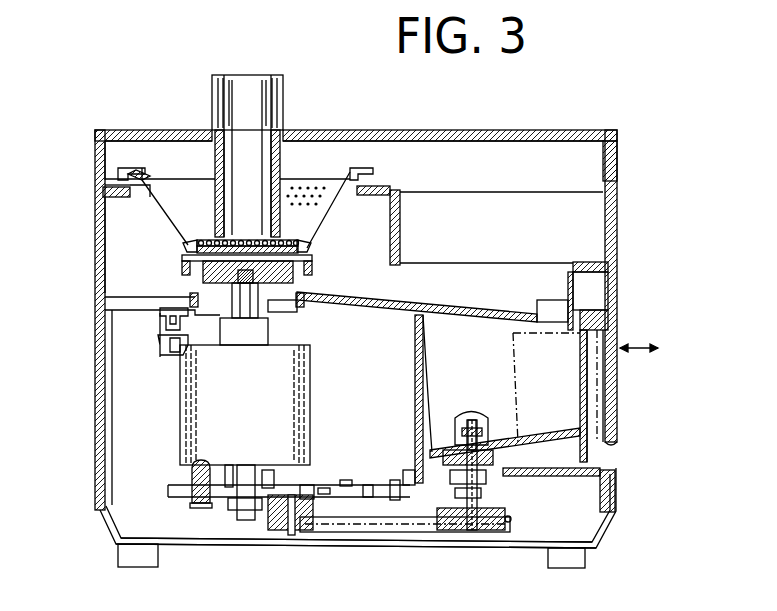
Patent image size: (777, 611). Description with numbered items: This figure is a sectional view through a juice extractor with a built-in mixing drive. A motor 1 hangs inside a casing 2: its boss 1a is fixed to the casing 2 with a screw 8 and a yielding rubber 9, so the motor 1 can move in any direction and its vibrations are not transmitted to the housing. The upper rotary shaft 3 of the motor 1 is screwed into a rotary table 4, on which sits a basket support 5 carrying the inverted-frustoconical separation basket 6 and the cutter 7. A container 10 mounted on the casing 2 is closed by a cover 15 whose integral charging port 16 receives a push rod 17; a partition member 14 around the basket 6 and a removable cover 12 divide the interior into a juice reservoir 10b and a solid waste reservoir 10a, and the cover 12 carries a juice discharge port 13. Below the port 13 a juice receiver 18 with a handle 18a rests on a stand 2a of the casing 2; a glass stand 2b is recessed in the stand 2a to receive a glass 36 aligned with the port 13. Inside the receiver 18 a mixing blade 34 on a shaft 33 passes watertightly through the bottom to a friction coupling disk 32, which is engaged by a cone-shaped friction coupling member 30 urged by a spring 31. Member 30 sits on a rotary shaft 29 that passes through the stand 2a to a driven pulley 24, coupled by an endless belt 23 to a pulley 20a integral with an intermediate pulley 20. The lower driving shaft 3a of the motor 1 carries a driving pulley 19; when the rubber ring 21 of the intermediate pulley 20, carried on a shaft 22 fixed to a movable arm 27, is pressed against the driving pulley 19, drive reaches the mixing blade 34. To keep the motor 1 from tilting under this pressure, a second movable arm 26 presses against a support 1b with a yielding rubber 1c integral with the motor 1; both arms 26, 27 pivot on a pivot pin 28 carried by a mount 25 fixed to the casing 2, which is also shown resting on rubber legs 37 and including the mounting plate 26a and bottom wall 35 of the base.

The motor 1 is at (185, 424).
The boss 1a is at (171, 350).
The support 1b is at (210, 509).
The yielding rubber 1c is at (197, 504).
The casing 2 is at (103, 425).
The stand 2a is at (602, 470).
The glass stand 2b is at (557, 478).
The rotary shaft 3 is at (258, 304).
The lower driving shaft 3a is at (245, 522).
The rotary table 4 is at (284, 268).
The basket support 5 is at (184, 262).
The separation basket 6 is at (157, 200).
The cutter 7 is at (202, 243).
The screw 8 is at (166, 346).
The yielding rubber 9 is at (168, 322).
The container 10 is at (97, 212).
The solid waste reservoir 10a is at (600, 224).
The juice reservoir 10b is at (120, 241).
The cover 12 is at (515, 258).
The juice discharge port 13 is at (560, 303).
The partition member 14 is at (114, 181).
The cover 15 is at (362, 130).
The charging port 16 is at (274, 176).
The push rod 17 is at (247, 90).
The juice receiver 18 is at (551, 306).
The handle 18a is at (590, 438).
The driving pulley 19 is at (228, 485).
The intermediate pulley 20 is at (268, 480).
The pulley 20a is at (302, 545).
The rubber ring 21 is at (323, 490).
The shaft 22 is at (290, 532).
The endless belt 23 is at (373, 520).
The driven pulley 24 is at (448, 532).
The mount 25 is at (407, 478).
The movable arm 26 is at (346, 482).
The motor mounting plate 26a is at (180, 488).
The movable arm 27 is at (367, 490).
The pivot pin 28 is at (394, 500).
The rotary shaft 29 is at (487, 530).
The friction coupling member 30 is at (495, 478).
The spring 31 is at (492, 498).
The friction coupling disk 32 is at (496, 462).
The shaft 33 is at (488, 443).
The mixing blade 34 is at (478, 425).
The bottom wall 35 is at (597, 543).
The glass 36 is at (600, 378).
The rubber leg 37 is at (580, 560).